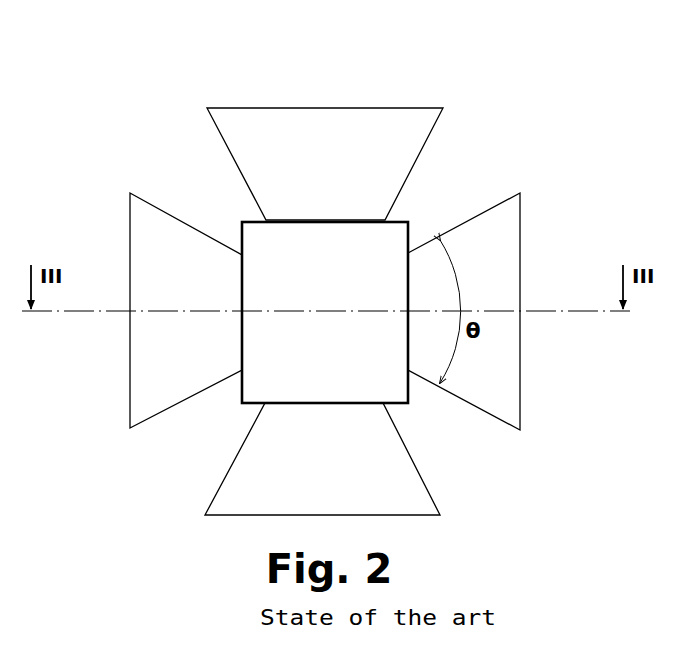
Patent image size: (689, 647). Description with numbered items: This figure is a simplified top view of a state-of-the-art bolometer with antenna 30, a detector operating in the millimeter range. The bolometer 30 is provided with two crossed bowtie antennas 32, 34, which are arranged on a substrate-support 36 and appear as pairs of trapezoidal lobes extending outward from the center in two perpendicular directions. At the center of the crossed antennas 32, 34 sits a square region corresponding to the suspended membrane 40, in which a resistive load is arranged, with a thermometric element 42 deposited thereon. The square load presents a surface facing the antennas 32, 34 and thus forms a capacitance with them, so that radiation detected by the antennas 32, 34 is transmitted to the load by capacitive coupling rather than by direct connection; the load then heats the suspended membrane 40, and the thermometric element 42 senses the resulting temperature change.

The bolometer with antenna 30 is at (175, 138).
The bowtie antenna 32 is at (393, 125).
The bowtie antenna 34 is at (510, 262).
The substrate-support 36 is at (317, 74).
The suspended membrane 40 is at (242, 387).
The thermometric element 42 is at (398, 236).